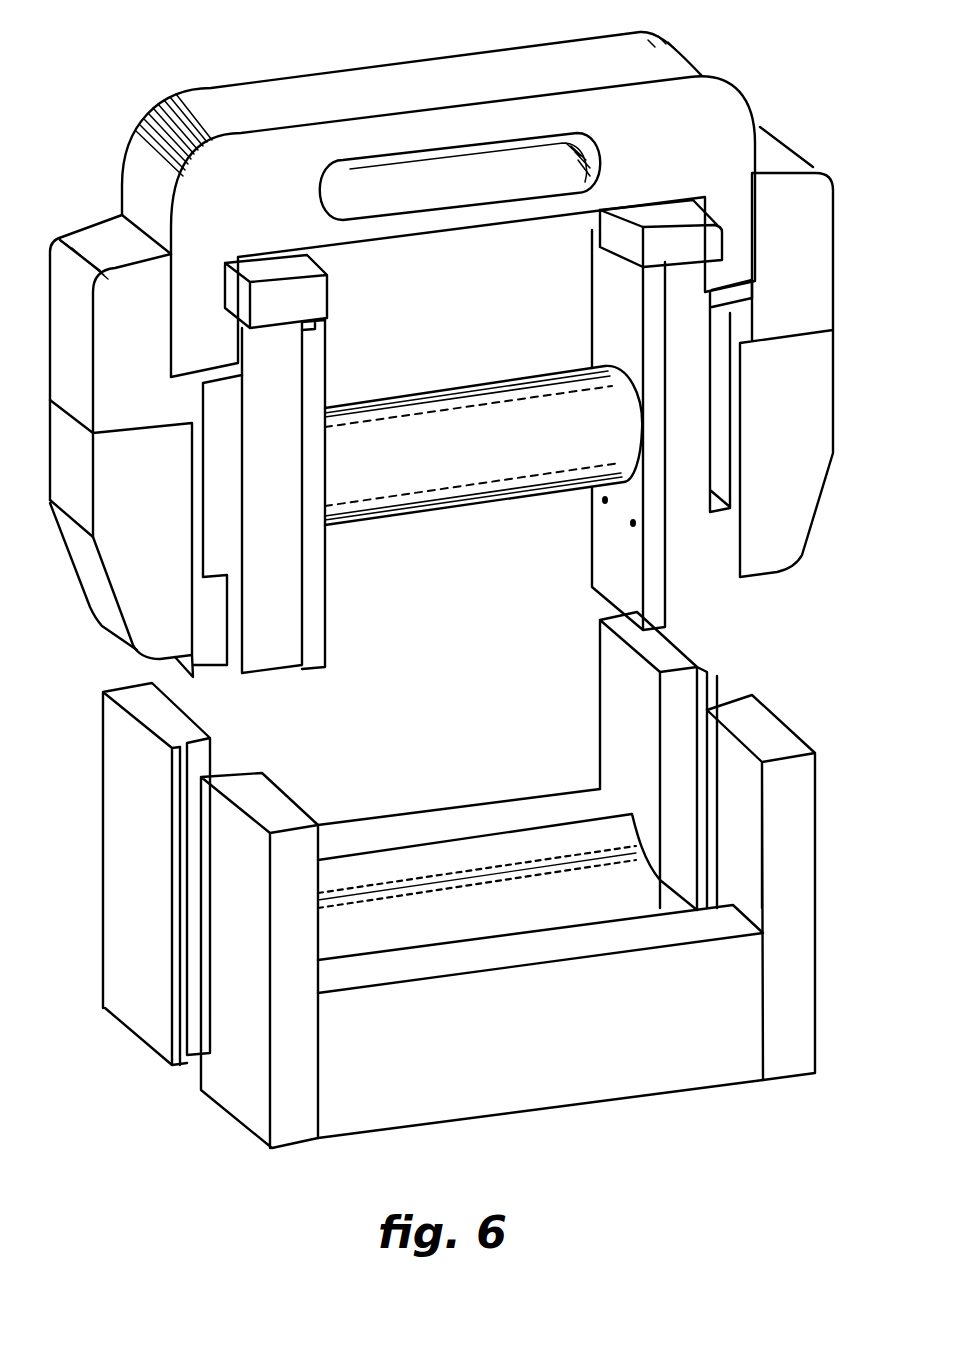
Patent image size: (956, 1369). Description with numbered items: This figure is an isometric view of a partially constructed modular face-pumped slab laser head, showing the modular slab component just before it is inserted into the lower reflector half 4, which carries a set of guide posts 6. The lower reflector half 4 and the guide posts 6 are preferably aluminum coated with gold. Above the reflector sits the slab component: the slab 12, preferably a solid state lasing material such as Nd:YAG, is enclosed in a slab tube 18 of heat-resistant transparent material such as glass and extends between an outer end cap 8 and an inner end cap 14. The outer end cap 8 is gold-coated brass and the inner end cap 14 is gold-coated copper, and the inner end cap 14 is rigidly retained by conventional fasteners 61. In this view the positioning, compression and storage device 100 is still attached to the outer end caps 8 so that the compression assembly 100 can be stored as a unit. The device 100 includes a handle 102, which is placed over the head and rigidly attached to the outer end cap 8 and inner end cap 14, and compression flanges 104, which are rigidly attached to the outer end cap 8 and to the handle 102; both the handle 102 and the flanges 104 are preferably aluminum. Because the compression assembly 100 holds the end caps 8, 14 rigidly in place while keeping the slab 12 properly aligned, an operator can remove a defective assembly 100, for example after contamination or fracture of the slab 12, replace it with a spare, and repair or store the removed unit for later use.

The positioning compression and storage device 100 is at (124, 127).
The handle 102 is at (660, 60).
The compression flanges 104 is at (153, 373).
The outer end cap 8 is at (273, 503).
The slab tube 18 is at (470, 387).
The slab 12 is at (526, 457).
The fasteners 61 is at (598, 503).
The inner end cap 14 is at (607, 575).
The lower reflector half 4 is at (218, 1167).
The guide posts 6 is at (142, 862).